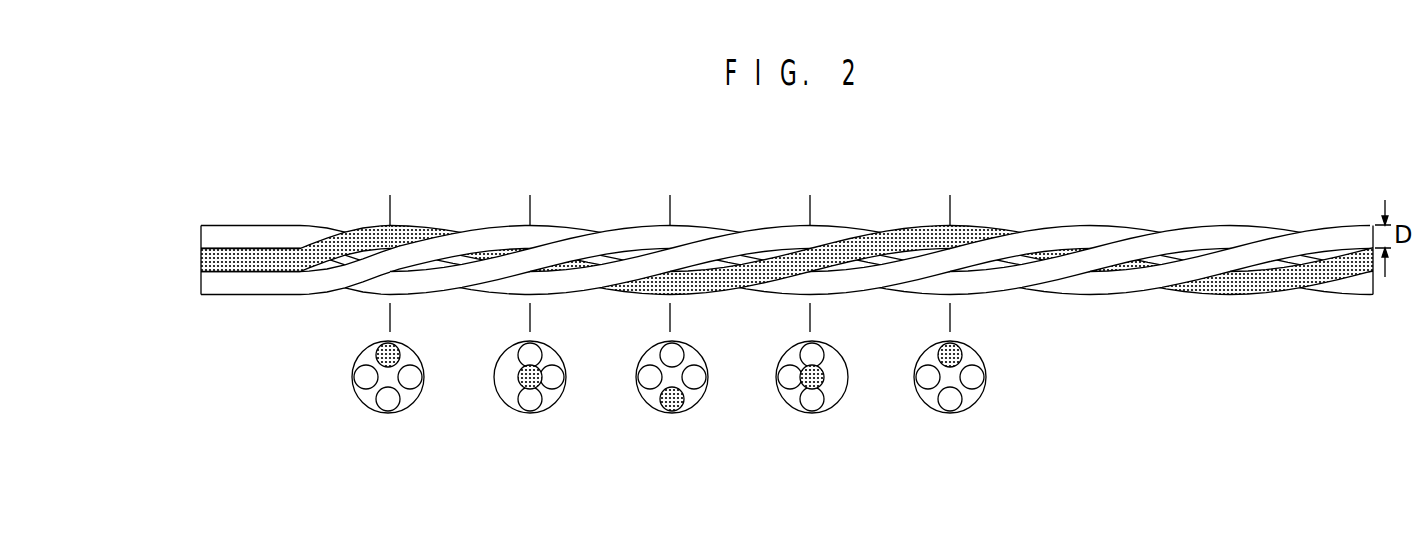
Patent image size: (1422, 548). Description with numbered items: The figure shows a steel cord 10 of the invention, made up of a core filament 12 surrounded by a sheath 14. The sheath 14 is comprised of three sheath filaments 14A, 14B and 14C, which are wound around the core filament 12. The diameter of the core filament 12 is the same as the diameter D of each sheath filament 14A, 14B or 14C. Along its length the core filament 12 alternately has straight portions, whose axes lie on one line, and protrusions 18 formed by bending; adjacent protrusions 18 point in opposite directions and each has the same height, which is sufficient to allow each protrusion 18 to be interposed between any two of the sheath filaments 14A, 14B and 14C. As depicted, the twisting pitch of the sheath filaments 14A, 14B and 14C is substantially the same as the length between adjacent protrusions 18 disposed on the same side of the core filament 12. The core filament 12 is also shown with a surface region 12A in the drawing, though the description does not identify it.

The steel cord 10 is at (1150, 165).
The core filament 12 is at (192, 261).
The coating of core wire 12A is at (268, 257).
The sheath 14 is at (192, 243).
The sheath filament 14A is at (845, 230).
The sheath filament 14B is at (688, 232).
The sheath filament 14C is at (550, 230).
The protrusion 18 is at (388, 226).